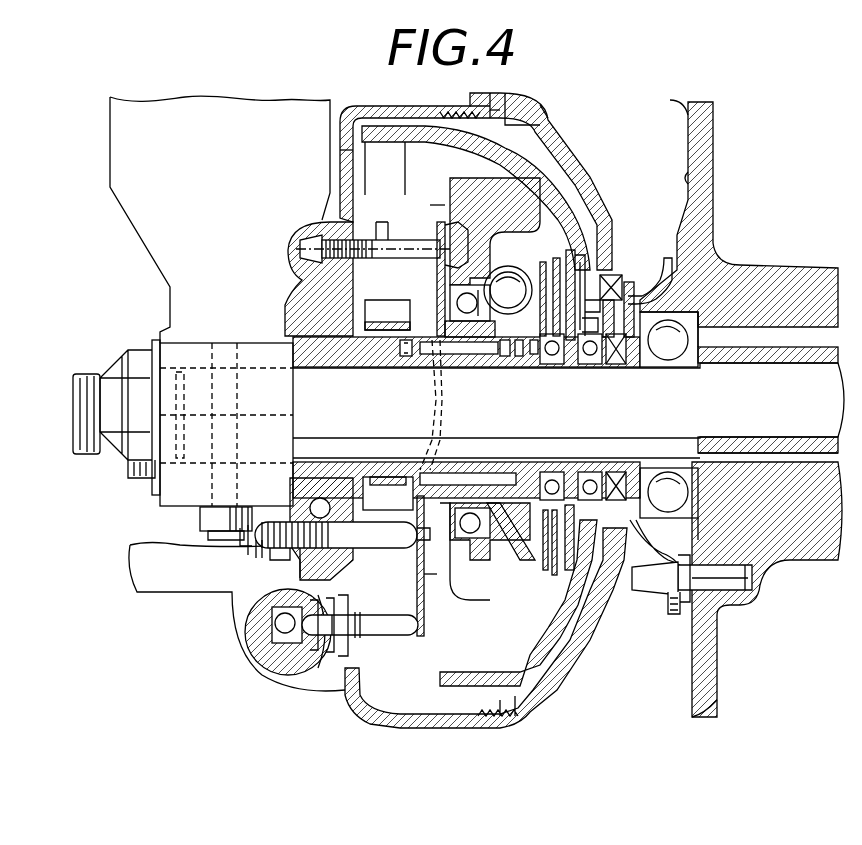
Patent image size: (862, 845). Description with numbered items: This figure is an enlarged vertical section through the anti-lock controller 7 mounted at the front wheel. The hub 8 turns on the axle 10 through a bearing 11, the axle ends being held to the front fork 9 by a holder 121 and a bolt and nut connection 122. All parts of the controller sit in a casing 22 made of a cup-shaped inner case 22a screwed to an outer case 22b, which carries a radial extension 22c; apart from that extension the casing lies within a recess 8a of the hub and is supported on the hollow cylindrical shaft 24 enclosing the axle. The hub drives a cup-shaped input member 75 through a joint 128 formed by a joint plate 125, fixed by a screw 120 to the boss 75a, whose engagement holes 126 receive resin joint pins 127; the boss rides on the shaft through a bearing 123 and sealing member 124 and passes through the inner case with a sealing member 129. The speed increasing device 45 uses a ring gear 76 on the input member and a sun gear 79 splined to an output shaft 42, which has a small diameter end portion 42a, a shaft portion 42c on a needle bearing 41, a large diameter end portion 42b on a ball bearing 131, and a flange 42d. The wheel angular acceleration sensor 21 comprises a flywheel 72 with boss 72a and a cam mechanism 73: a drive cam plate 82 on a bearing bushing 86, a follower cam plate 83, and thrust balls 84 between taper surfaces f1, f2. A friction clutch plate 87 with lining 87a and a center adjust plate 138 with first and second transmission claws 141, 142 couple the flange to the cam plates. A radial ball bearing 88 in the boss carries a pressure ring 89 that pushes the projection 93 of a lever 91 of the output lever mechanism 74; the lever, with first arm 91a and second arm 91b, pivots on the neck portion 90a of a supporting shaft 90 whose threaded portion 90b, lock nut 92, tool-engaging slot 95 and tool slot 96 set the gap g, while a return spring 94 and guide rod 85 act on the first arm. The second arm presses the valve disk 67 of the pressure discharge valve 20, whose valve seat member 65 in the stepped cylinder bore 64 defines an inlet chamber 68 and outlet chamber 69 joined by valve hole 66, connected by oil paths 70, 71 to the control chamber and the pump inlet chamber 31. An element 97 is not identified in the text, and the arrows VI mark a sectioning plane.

The anti-lock controller 7 is at (386, 106).
The hub 8 is at (702, 157).
The recess 8a is at (690, 178).
The front fork 9 is at (280, 103).
The axle 10 is at (358, 419).
The bearing 11 is at (668, 362).
The pressure discharge valve 20 is at (312, 672).
The wheel angular acceleration sensor 21 is at (510, 230).
The casing 22 is at (514, 90).
The inner case 22a is at (546, 105).
The outer case 22b is at (503, 96).
The extension 22c is at (178, 586).
The hollow cylindrical shaft 24 is at (340, 368).
The inlet chamber 31 is at (300, 506).
The needle bearing 41 is at (466, 356).
The output shaft 42 is at (532, 356).
The small diameter end portion 42a is at (407, 358).
The large diameter end portion 42b is at (600, 320).
The shaft portion 42c is at (520, 360).
The flange 42d is at (605, 300).
The speed increasing device 45 is at (352, 146).
The stepped cylinder bore 64 is at (280, 658).
The valve seat member 65 is at (312, 650).
The valve hole 66 is at (330, 652).
The valve disk 67 is at (410, 635).
The inlet chamber 68 is at (272, 612).
The outlet chamber 69 is at (343, 656).
The oil path 70 is at (275, 630).
The oil path 71 is at (310, 570).
The flywheel 72 is at (458, 186).
The boss 72a is at (468, 548).
The cam mechanism 73 is at (556, 275).
The output lever mechanism 74 is at (438, 205).
The input member 75 is at (495, 150).
The boss 75a is at (615, 462).
The ring gear 76 is at (382, 142).
The sun gear 79 is at (388, 300).
The drive cam plate 82 is at (544, 268).
The follower cam plate 83 is at (500, 268).
The thrust balls 84 is at (520, 262).
The guide rod 85 is at (367, 279).
The bearing bushing 86 is at (507, 358).
The friction clutch plate 87 is at (519, 519).
The friction lining 87a is at (512, 540).
The radial ball bearing 88 is at (450, 303).
The pressure ring 89 is at (445, 325).
The supporting shaft 90 is at (336, 535).
The neck portion 90a is at (428, 540).
The threaded portion 90b is at (282, 562).
The lever 91 is at (437, 284).
The first arm 91a is at (446, 224).
The second arm 91b is at (424, 592).
The lock nut 92 is at (262, 558).
The projection 93 is at (438, 417).
The return spring 94 is at (382, 222).
The tool-engaging slot 95 is at (250, 545).
The tool slot 96 is at (242, 542).
The bolt shank 97 is at (330, 535).
The screw 120 is at (655, 546).
The holder 121 is at (165, 501).
The bolt and nut connection 122 is at (204, 522).
The bearing 123 is at (590, 356).
The sealing member 124 is at (616, 364).
The joint plate 125 is at (676, 614).
The engagement holes 126 is at (690, 574).
The joint pins 127 is at (648, 598).
The joint 128 is at (680, 636).
The sealing member 129 is at (648, 282).
The ball bearing 131 is at (552, 356).
The center adjust plate 138 is at (570, 275).
The first transmission claws 141 is at (598, 272).
The second transmission claws 142 is at (569, 570).
The taper surface f1 is at (553, 566).
The taper surface f2 is at (543, 562).
The gap g is at (424, 575).
The section line VI is at (495, 272).